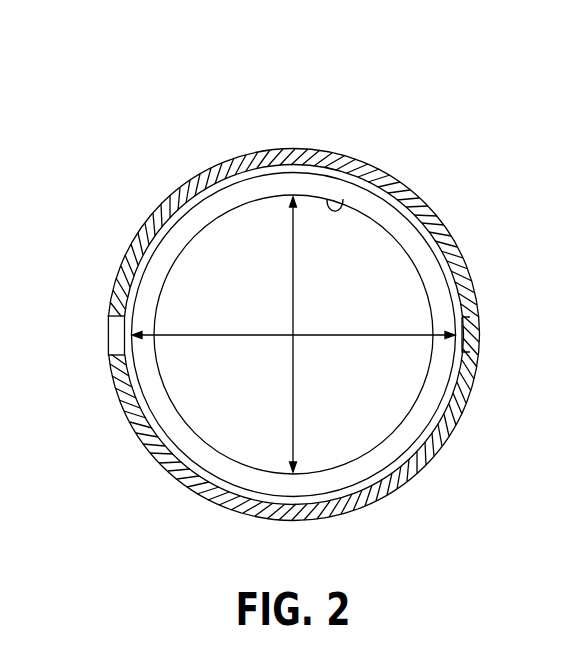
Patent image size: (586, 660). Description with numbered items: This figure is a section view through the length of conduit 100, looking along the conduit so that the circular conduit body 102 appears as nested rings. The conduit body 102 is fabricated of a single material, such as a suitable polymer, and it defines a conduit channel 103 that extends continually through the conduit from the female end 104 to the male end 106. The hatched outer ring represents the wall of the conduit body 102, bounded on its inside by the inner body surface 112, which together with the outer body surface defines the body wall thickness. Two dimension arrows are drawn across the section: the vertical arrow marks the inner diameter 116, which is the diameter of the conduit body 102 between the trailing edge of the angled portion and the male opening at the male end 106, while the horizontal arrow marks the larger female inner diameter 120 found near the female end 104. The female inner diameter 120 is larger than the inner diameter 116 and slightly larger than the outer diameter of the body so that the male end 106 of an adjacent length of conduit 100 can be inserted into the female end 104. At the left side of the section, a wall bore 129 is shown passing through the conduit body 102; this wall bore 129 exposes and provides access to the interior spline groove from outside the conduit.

The length of conduit 100 is at (451, 93).
The conduit body 102 is at (461, 418).
The conduit channel 103 is at (357, 280).
The female end 104 is at (469, 276).
The male end 106 is at (244, 197).
The inner body surface 112 is at (341, 204).
The inner diameter 116 is at (294, 417).
The female inner diameter 120 is at (181, 340).
The wall bore 129 is at (108, 335).